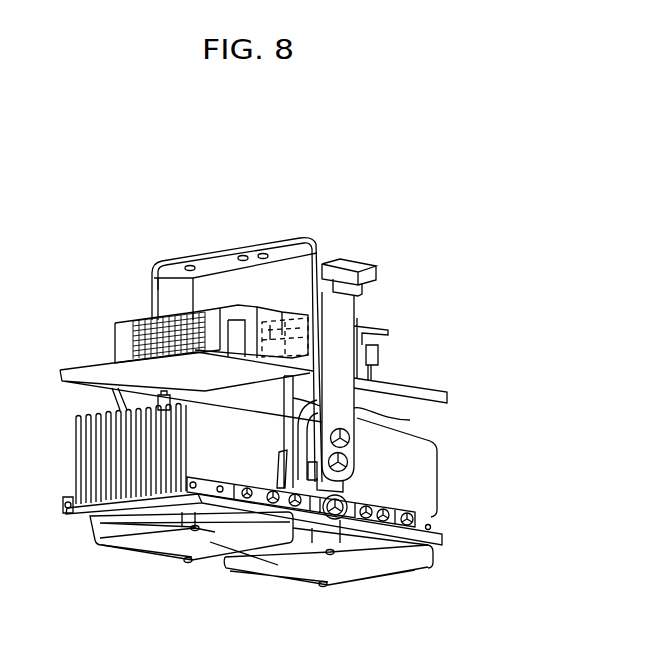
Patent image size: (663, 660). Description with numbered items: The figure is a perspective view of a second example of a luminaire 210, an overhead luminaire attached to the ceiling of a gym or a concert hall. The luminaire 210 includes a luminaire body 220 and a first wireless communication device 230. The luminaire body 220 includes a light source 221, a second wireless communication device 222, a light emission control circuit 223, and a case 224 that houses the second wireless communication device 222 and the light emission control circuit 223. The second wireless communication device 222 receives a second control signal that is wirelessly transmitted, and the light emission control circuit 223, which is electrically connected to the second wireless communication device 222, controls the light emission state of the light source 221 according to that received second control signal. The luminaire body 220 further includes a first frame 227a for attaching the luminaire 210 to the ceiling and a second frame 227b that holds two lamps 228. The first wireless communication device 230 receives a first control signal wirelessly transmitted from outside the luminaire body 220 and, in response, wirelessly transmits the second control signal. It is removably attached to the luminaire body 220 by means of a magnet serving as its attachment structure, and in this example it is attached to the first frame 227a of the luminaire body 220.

The luminaire 210 is at (425, 172).
The luminaire body 220 is at (112, 274).
The light source 221 is at (184, 529).
The second wireless communication device 222 is at (292, 308).
The light emission control circuit 223 is at (380, 353).
The case 224 is at (362, 335).
The first frame 227a is at (410, 420).
The second frame 227b is at (348, 512).
The lamps 228 is at (210, 545).
The first wireless communication device 230 is at (345, 263).